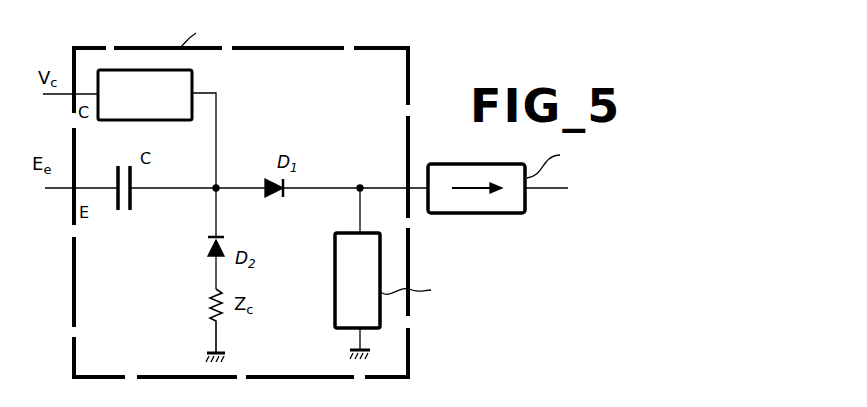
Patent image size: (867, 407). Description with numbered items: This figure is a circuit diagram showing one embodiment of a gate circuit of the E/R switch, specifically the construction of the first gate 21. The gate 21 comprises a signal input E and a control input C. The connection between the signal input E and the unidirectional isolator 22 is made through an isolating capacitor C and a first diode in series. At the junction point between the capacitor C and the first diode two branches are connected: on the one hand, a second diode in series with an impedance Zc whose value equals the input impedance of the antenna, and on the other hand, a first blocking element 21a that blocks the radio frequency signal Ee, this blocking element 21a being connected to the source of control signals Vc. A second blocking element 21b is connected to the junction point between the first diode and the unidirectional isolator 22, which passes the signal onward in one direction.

The first gate 21 is at (150, 47).
The first blocking element 21a is at (194, 88).
The second blocking element 21b is at (335, 258).
The unidirectional isolator 22 is at (462, 214).